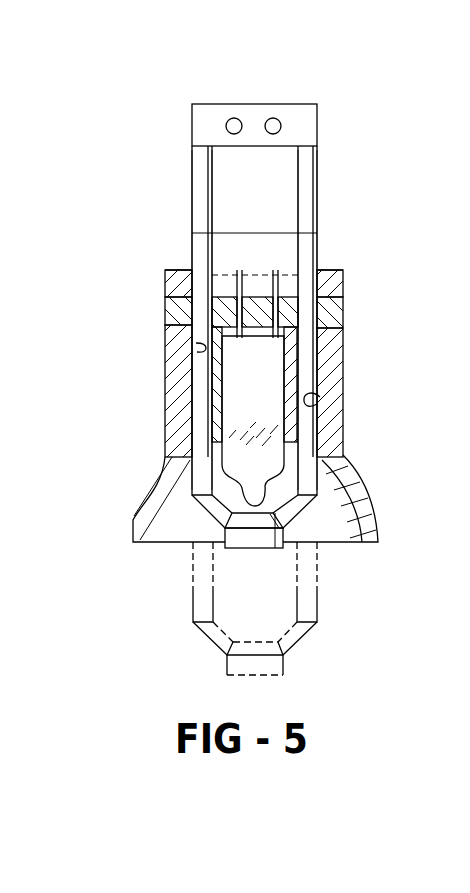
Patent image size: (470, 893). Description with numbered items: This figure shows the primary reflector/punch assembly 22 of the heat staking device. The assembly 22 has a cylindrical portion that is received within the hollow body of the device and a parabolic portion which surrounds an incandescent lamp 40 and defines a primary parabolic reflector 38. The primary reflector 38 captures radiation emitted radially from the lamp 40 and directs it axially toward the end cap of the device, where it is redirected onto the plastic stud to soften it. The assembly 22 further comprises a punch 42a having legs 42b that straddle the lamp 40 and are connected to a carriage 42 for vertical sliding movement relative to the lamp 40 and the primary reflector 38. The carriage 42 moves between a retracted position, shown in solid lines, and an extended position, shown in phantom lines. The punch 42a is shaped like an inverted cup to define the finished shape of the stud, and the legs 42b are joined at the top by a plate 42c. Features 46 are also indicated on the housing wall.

The assembly 22 is at (350, 313).
The primary parabolic reflector 38 is at (180, 488).
The incandescent lamp 40 is at (268, 471).
The carriage 42 is at (323, 245).
The punch 42a is at (253, 550).
The punch legs 42b is at (198, 198).
The plate 42c is at (213, 112).
The retaining bosses 46 is at (196, 343).